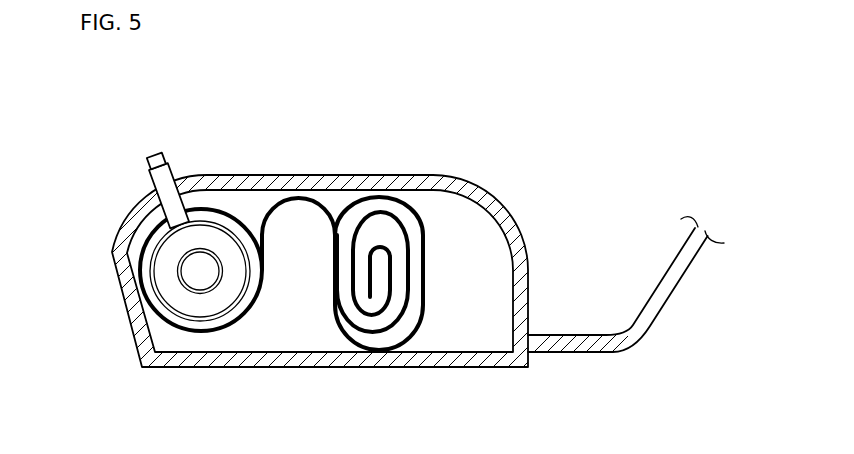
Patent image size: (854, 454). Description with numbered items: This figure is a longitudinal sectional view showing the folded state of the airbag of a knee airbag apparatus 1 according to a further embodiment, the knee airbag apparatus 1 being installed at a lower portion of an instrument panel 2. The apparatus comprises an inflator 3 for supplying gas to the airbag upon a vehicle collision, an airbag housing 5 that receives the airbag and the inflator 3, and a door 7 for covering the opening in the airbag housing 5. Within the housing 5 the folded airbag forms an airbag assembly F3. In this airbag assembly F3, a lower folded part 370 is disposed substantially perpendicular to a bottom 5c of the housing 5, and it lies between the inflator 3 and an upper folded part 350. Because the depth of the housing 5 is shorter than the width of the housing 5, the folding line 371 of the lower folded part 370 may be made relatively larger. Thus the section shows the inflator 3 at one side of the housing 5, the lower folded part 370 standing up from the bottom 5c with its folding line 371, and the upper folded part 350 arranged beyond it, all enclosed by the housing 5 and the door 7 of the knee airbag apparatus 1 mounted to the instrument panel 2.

The knee airbag apparatus 1 is at (187, 75).
The instrument panel 2 is at (673, 278).
The inflator 3 is at (165, 271).
The airbag housing 5 is at (118, 242).
The bottom of housing 5c is at (232, 183).
The door 7 is at (186, 362).
The upper folded part 350 is at (436, 258).
The lower folded part 370 is at (331, 200).
The folding line 371 is at (298, 198).
The airbag assembly F3 is at (409, 194).